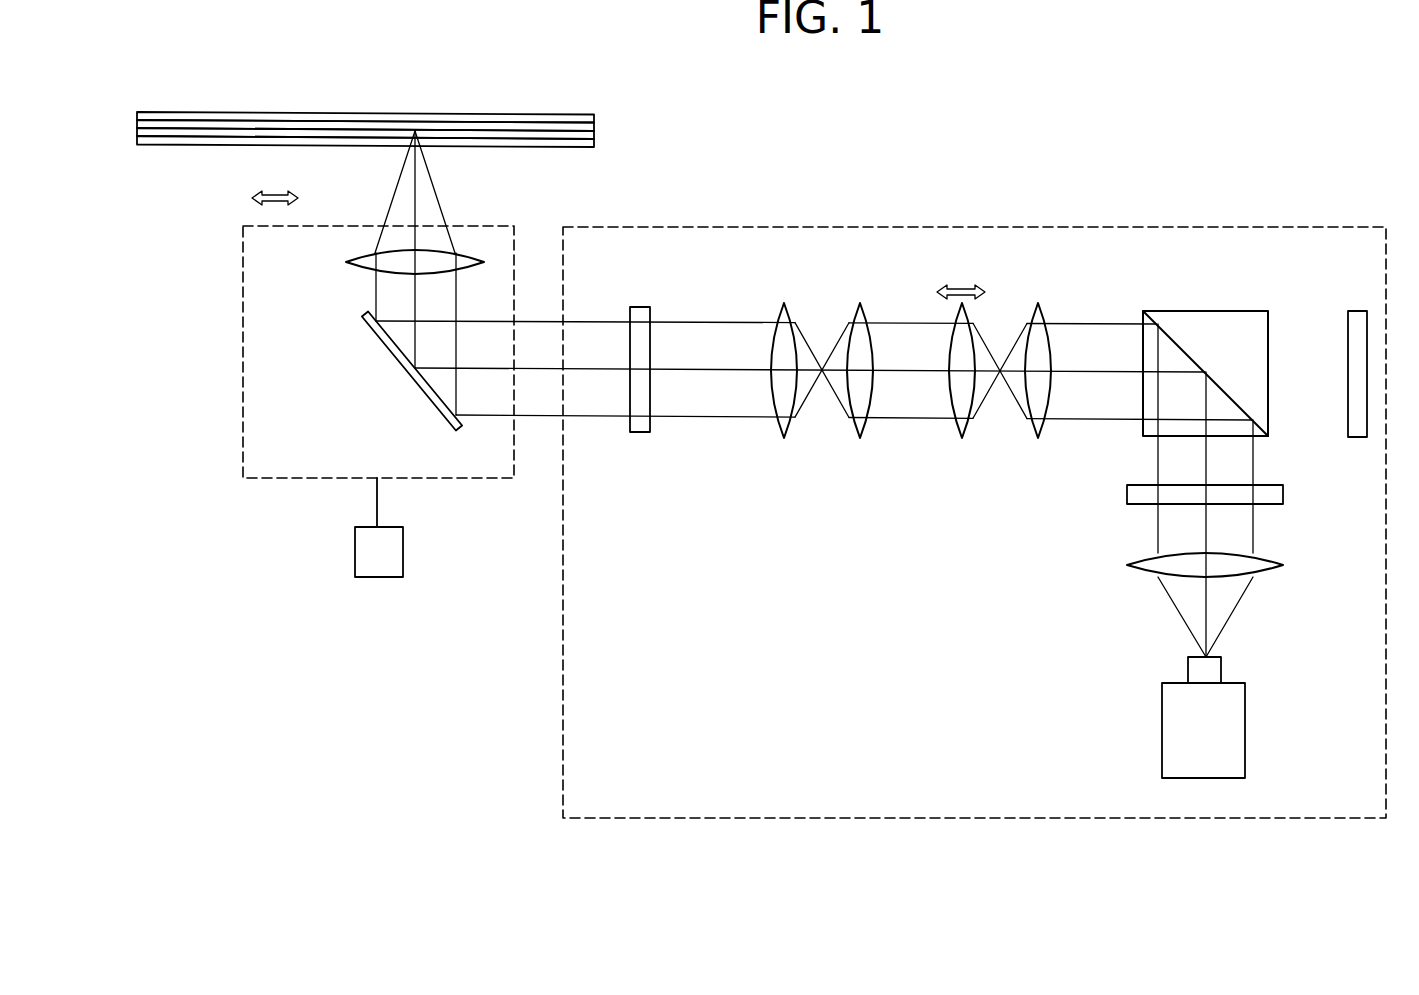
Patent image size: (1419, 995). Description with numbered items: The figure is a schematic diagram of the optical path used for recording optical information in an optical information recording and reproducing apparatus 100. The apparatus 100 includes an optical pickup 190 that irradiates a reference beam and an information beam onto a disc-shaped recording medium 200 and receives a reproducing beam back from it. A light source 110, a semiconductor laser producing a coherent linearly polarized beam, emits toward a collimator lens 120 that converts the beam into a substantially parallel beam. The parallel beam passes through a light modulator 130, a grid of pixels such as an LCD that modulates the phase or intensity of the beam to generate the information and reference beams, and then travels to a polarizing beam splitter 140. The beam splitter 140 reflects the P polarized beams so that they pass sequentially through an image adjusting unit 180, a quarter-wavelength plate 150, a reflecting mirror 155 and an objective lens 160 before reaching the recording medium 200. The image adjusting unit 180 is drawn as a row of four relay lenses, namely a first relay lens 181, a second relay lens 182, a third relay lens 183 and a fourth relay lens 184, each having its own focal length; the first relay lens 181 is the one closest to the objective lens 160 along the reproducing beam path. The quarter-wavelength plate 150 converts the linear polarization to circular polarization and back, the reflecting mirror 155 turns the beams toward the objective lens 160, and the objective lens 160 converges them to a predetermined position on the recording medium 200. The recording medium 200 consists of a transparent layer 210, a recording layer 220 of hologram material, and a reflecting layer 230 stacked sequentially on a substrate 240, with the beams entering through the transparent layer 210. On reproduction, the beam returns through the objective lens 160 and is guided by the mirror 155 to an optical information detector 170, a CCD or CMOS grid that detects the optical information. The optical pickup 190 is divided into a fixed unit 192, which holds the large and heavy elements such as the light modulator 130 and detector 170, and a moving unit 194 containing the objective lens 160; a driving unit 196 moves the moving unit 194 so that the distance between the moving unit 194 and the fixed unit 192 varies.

The optical information recording and reproducing apparatus 100 is at (913, 164).
The light source 110 is at (1247, 705).
The collimator lens 120 is at (1285, 565).
The light modulator 130 is at (1285, 490).
The polarizing beam splitter 140 is at (1232, 311).
The quarter-wavelength plate 150 is at (640, 435).
The reflecting mirror 155 is at (375, 337).
The objective lens 160 is at (347, 259).
The optical information detector 170 is at (1357, 311).
The image adjusting unit 180 is at (1060, 546).
The first relay lens 181 is at (784, 440).
The second relay lens 182 is at (860, 440).
The third relay lens 183 is at (962, 440).
The fourth relay lens 184 is at (1038, 440).
The optical pickup 190 is at (468, 568).
The fixed unit 192 is at (562, 625).
The moving unit 194 is at (487, 480).
The driving unit 196 is at (355, 547).
The recording medium 200 is at (686, 85).
The transparent layer 210 is at (594, 147).
The recording layer 220 is at (594, 137).
The reflecting layer 230 is at (594, 125).
The substrate 240 is at (594, 115).